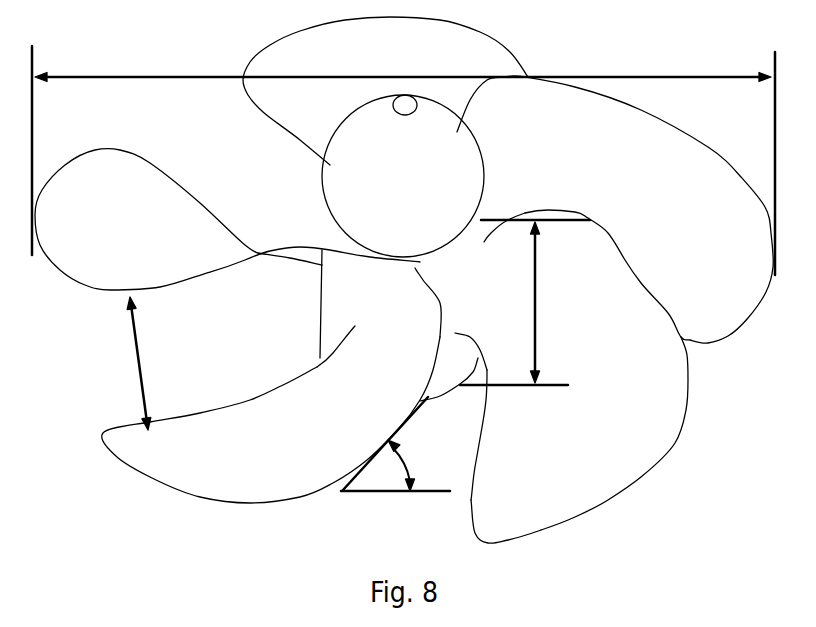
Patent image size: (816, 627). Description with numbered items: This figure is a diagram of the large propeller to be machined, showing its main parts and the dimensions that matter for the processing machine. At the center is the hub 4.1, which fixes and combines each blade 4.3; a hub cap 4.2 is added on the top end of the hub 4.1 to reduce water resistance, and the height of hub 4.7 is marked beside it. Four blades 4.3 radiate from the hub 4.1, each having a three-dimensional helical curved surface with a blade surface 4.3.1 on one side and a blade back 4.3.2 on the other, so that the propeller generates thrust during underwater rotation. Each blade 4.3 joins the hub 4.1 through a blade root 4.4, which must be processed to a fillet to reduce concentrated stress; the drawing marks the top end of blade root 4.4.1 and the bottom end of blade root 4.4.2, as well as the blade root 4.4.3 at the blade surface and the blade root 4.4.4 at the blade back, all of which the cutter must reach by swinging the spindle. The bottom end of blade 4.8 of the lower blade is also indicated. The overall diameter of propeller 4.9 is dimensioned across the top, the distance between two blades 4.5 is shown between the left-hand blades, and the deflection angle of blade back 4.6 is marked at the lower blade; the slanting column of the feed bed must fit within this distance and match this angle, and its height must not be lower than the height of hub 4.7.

The hub 4.1 is at (448, 363).
The hub cap 4.2 is at (358, 160).
The blade 4.3 is at (647, 235).
The blade surface 4.3.1 is at (295, 401).
The blade back 4.3.2 is at (293, 257).
The blade root 4.4 is at (457, 279).
The top end of blade root 4.4.1 is at (491, 236).
The bottom end of blade root 4.4.2 is at (450, 335).
The blade root at blade surface 4.4.3 is at (368, 323).
The blade root at blade back 4.4.4 is at (322, 263).
The distance between two blades 4.5 is at (119, 363).
The deflection angle of blade back 4.6 is at (404, 444).
The height of hub 4.7 is at (525, 302).
The bottom end of blade 4.8 is at (480, 537).
The diameter of propeller 4.9 is at (430, 75).